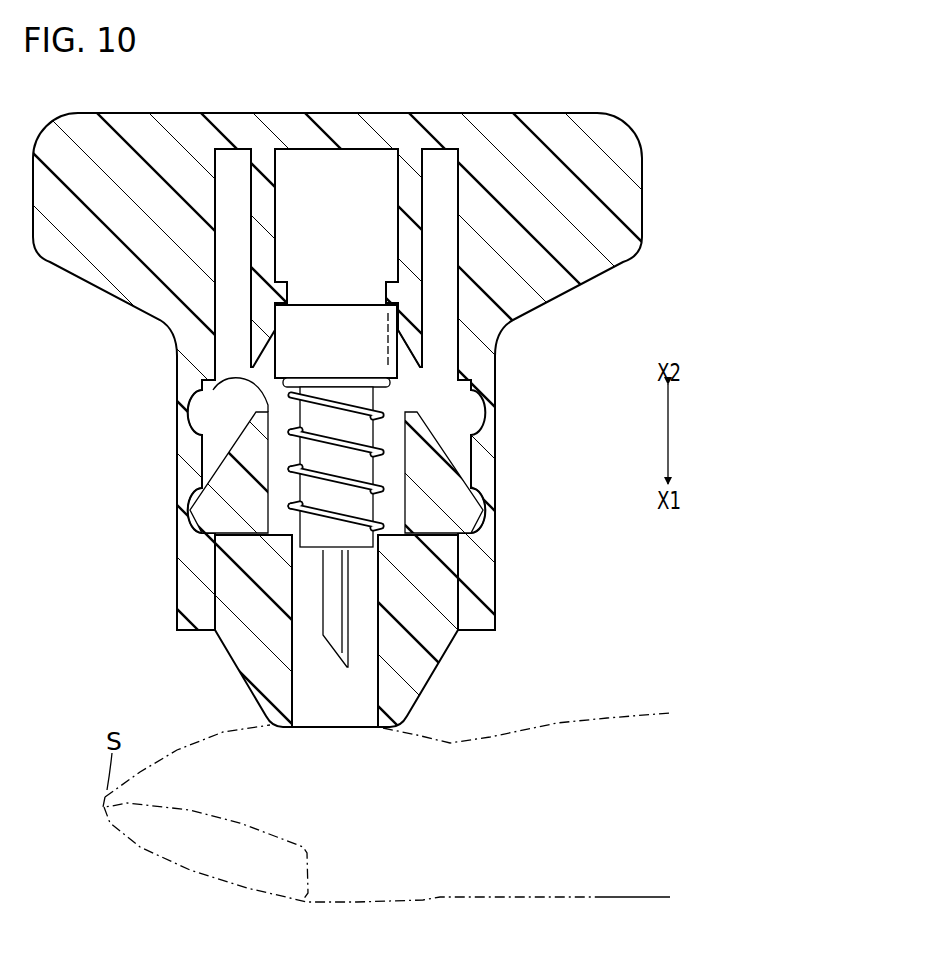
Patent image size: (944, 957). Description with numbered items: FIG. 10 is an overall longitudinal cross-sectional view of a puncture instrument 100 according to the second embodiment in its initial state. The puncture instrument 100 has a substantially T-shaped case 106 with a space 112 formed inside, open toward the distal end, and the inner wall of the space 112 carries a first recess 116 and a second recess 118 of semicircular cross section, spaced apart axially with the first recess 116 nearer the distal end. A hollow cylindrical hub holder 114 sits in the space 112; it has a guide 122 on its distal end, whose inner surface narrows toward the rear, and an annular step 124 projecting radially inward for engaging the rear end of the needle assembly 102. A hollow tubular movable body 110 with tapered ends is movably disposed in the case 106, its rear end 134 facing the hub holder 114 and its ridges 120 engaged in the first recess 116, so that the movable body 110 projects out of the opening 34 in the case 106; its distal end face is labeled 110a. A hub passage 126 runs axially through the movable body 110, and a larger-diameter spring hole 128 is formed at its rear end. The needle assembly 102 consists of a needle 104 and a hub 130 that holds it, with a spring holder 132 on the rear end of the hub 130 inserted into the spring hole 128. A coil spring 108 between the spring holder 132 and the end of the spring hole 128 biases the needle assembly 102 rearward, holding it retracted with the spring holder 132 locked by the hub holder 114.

The puncture instrument 100 is at (647, 92).
The needle assembly 102 is at (382, 438).
The needle 104 is at (333, 652).
The case 106 is at (186, 110).
The spring 108 is at (238, 478).
The movable body 110 is at (226, 668).
The nozzle tip end face 110a is at (384, 730).
The space 112 is at (333, 165).
The hub holder 114 is at (276, 216).
The first recess 116 is at (195, 535).
The second recess 118 is at (200, 413).
The ridges 120 is at (476, 511).
The guide 122 is at (415, 338).
The step 124 is at (387, 293).
The hub passage 126 is at (297, 714).
The spring hole 128 is at (402, 486).
The hub 130 is at (293, 462).
The spring holder 132 is at (309, 312).
The rear end 134 is at (213, 386).
The opening 34 is at (445, 620).